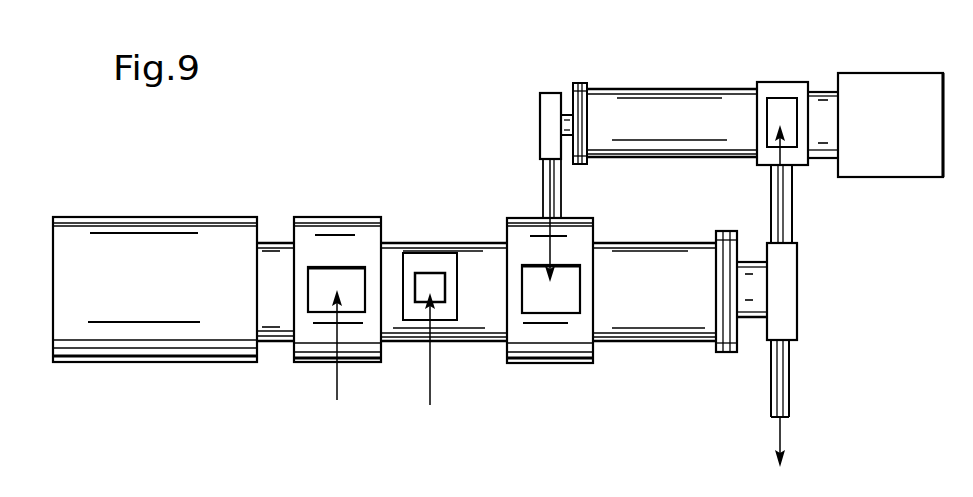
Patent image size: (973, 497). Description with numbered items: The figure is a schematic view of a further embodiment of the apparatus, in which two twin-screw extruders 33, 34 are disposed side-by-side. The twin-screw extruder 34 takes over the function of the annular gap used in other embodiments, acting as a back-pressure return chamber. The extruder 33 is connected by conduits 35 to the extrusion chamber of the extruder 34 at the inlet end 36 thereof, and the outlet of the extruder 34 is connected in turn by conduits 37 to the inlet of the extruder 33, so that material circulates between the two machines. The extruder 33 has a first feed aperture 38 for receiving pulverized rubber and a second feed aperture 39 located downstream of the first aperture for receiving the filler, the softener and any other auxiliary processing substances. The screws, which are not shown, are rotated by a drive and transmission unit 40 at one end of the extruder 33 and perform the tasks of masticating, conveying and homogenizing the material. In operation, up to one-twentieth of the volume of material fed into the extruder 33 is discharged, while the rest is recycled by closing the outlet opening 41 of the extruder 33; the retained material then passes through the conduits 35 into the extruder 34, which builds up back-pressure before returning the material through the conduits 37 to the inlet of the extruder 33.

The twin-screw extruder 33 is at (652, 321).
The twin-screw extruder 34 is at (655, 107).
The conduits 35 is at (791, 212).
The inlet end 36 is at (783, 108).
The conduits 37 is at (547, 188).
The first feed aperture 38 is at (315, 298).
The second feed aperture 39 is at (422, 290).
The drive and transmission unit 40 is at (143, 340).
The outlet opening 41 is at (784, 370).